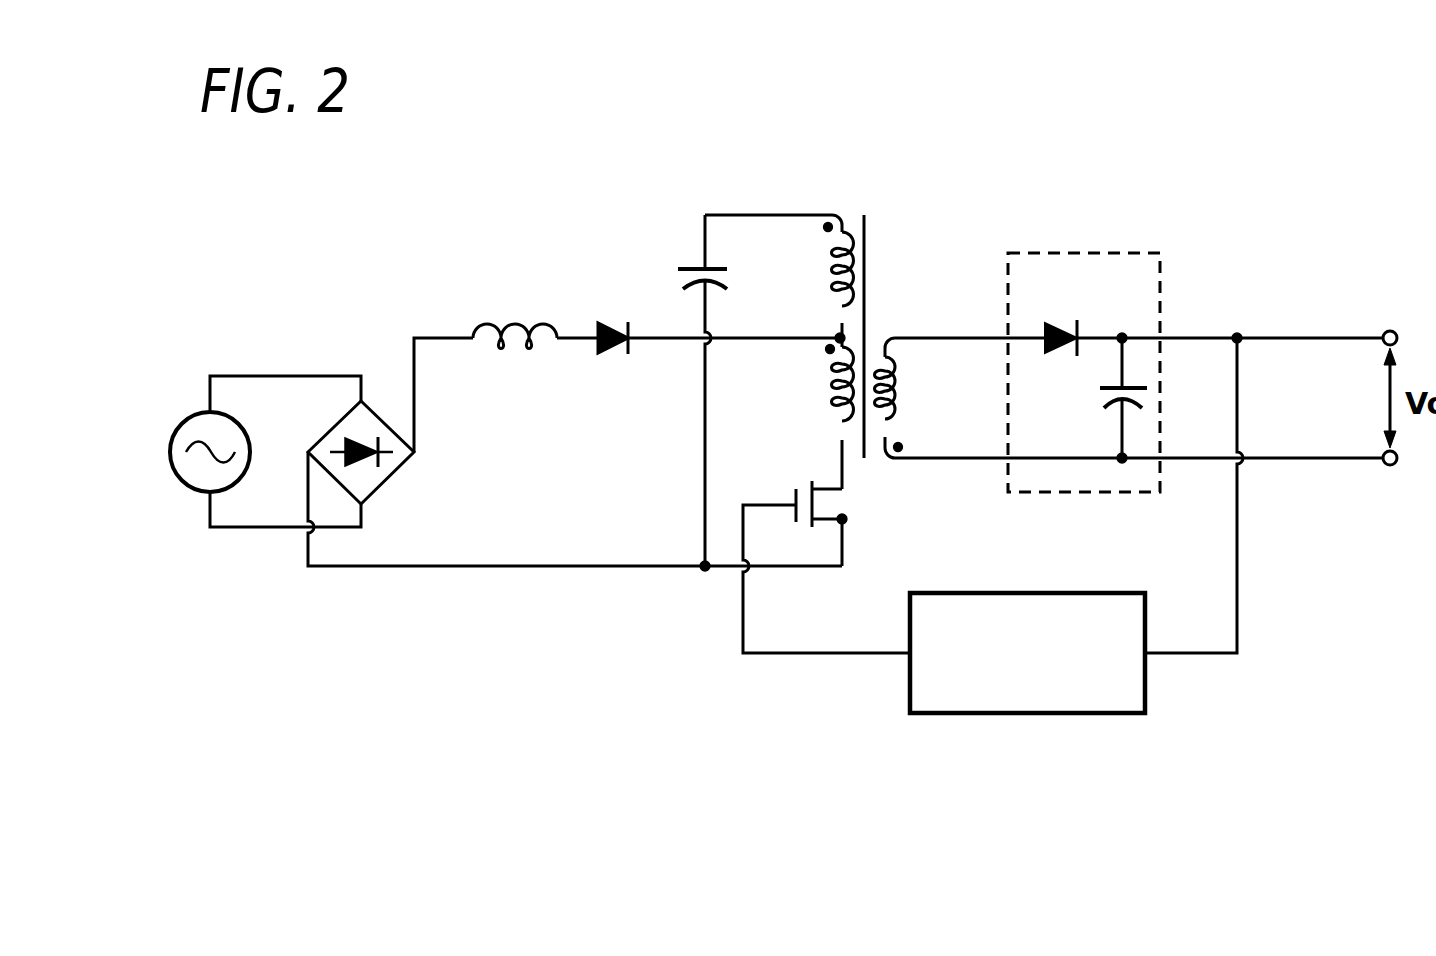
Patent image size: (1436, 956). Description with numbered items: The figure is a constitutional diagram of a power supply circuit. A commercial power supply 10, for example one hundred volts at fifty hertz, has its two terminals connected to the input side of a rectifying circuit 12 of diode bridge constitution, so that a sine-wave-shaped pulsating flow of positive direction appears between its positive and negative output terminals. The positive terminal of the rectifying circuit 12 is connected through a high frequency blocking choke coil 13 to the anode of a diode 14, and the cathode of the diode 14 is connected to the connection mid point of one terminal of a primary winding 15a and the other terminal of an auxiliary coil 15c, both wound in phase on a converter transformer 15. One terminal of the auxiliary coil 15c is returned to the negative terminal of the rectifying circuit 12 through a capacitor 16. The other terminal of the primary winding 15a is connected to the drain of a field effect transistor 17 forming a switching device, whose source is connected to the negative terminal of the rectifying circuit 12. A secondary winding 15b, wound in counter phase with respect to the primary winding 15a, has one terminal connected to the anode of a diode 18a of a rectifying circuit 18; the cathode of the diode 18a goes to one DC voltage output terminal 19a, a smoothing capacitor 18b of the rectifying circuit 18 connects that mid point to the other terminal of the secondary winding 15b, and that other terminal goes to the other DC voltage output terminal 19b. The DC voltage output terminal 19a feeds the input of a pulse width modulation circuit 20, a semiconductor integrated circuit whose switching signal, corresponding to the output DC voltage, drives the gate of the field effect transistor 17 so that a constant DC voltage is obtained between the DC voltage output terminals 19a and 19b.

The commercial power supply 10 is at (167, 453).
The rectifying circuit 12 is at (392, 443).
The high frequency blocking choke coil 13 is at (513, 315).
The diode 14 is at (616, 355).
The converter transformer 15 is at (868, 307).
The primary winding 15a is at (837, 402).
The secondary winding 15b is at (900, 395).
The auxiliary coil 15c is at (835, 279).
The capacitor 16 is at (677, 278).
The field effect transistor 17 is at (860, 505).
The rectifying circuit 18 is at (1084, 324).
The diode 18a is at (1060, 321).
The smoothing capacitor 18b is at (1099, 398).
The DC voltage output terminal 19a is at (1390, 329).
The DC voltage output terminal 19b is at (1394, 467).
The pulse width modulation circuit 20 is at (1033, 592).